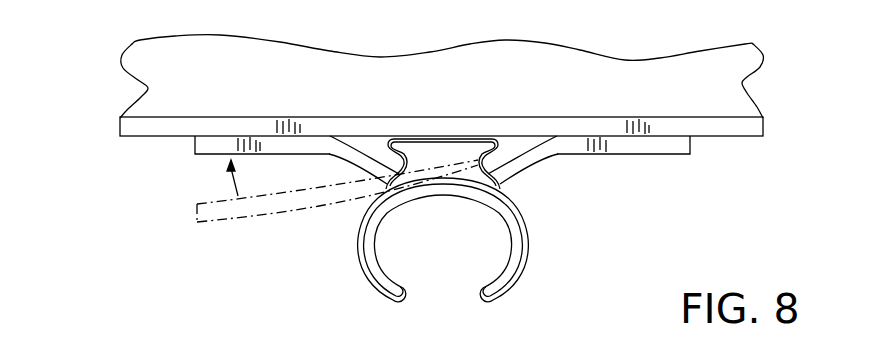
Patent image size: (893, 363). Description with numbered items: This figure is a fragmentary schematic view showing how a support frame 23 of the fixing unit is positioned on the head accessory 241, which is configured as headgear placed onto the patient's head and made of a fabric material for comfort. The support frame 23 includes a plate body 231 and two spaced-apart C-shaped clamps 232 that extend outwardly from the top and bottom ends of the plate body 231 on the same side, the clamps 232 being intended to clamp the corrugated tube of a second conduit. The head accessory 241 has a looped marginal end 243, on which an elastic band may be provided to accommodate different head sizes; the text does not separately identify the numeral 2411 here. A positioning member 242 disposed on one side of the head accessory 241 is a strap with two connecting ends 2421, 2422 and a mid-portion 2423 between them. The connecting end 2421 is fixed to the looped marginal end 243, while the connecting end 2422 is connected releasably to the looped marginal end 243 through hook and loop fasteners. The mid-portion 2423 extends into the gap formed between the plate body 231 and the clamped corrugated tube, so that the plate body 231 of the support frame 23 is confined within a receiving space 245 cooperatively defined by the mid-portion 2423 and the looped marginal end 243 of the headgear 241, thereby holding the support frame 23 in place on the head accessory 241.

The support frame 23 is at (491, 188).
The plate body 231 is at (446, 147).
The C-shaped clamps 232 is at (505, 278).
The head accessory 241 is at (405, 74).
The top surface of base body 2411 is at (173, 42).
The positioning member 242 is at (408, 213).
The connecting end 2421 is at (655, 146).
The connecting end 2422 is at (263, 147).
The mid-portion 2423 is at (430, 188).
The looped marginal end 243 is at (157, 128).
The receiving space 245 is at (515, 143).